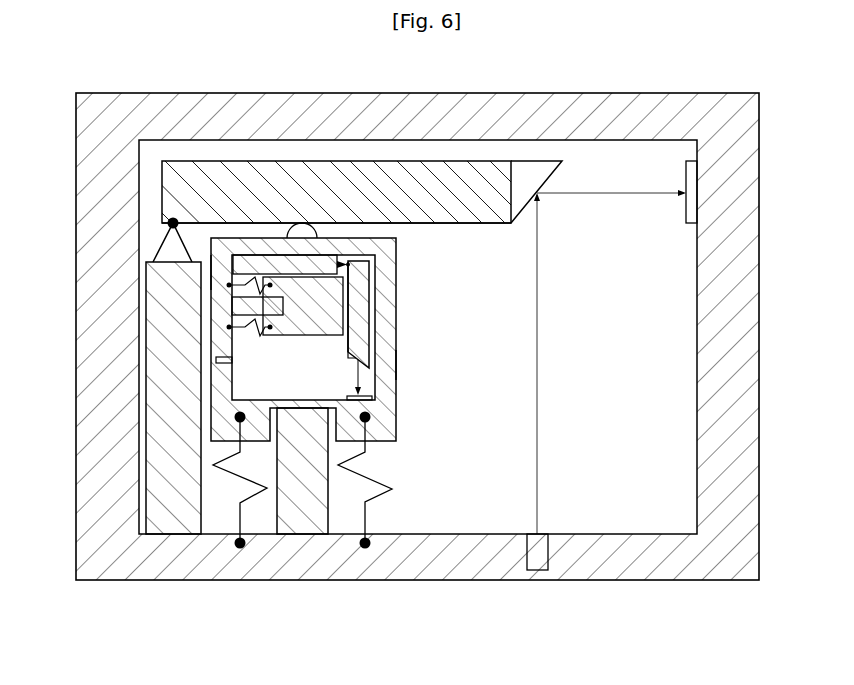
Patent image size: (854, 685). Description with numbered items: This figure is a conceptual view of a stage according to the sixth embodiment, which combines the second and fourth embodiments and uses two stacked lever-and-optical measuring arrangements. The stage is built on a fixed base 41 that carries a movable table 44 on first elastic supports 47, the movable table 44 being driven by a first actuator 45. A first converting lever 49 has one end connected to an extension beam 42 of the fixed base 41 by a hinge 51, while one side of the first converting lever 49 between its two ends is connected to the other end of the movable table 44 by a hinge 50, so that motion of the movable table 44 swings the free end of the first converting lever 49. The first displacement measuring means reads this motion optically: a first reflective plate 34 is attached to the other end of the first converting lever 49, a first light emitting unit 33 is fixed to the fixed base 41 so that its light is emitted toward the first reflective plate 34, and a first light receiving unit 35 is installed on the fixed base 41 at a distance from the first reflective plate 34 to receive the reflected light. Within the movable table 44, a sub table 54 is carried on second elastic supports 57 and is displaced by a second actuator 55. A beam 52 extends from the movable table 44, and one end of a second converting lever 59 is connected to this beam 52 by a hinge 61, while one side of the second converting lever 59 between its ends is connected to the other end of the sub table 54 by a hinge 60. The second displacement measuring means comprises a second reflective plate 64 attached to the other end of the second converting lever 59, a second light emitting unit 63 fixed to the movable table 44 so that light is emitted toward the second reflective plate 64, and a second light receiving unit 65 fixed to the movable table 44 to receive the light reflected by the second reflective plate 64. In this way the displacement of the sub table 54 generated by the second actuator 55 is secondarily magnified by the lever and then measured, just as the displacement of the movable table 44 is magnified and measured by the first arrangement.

The first light emitting unit 33 is at (540, 568).
The first reflective plate 34 is at (553, 180).
The first light receiving unit 35 is at (690, 168).
The fixed base 41 is at (736, 246).
The extension beam 42 is at (140, 462).
The movable table 44 is at (383, 365).
The first actuator 45 is at (300, 520).
The first elastic supports 47 is at (236, 520).
The first converting lever 49 is at (490, 212).
The hinge 50 is at (300, 224).
The hinge 51 is at (158, 204).
The beam 52 is at (373, 290).
The sub table 54 is at (300, 328).
The second actuator 55 is at (247, 312).
The second elastic supports 57 is at (200, 272).
The second converting lever 59 is at (360, 333).
The hinge 60 is at (348, 302).
The hinge 61 is at (348, 264).
The second light emitting unit 63 is at (216, 358).
The second reflective plate 64 is at (360, 373).
The second light receiving unit 65 is at (373, 388).